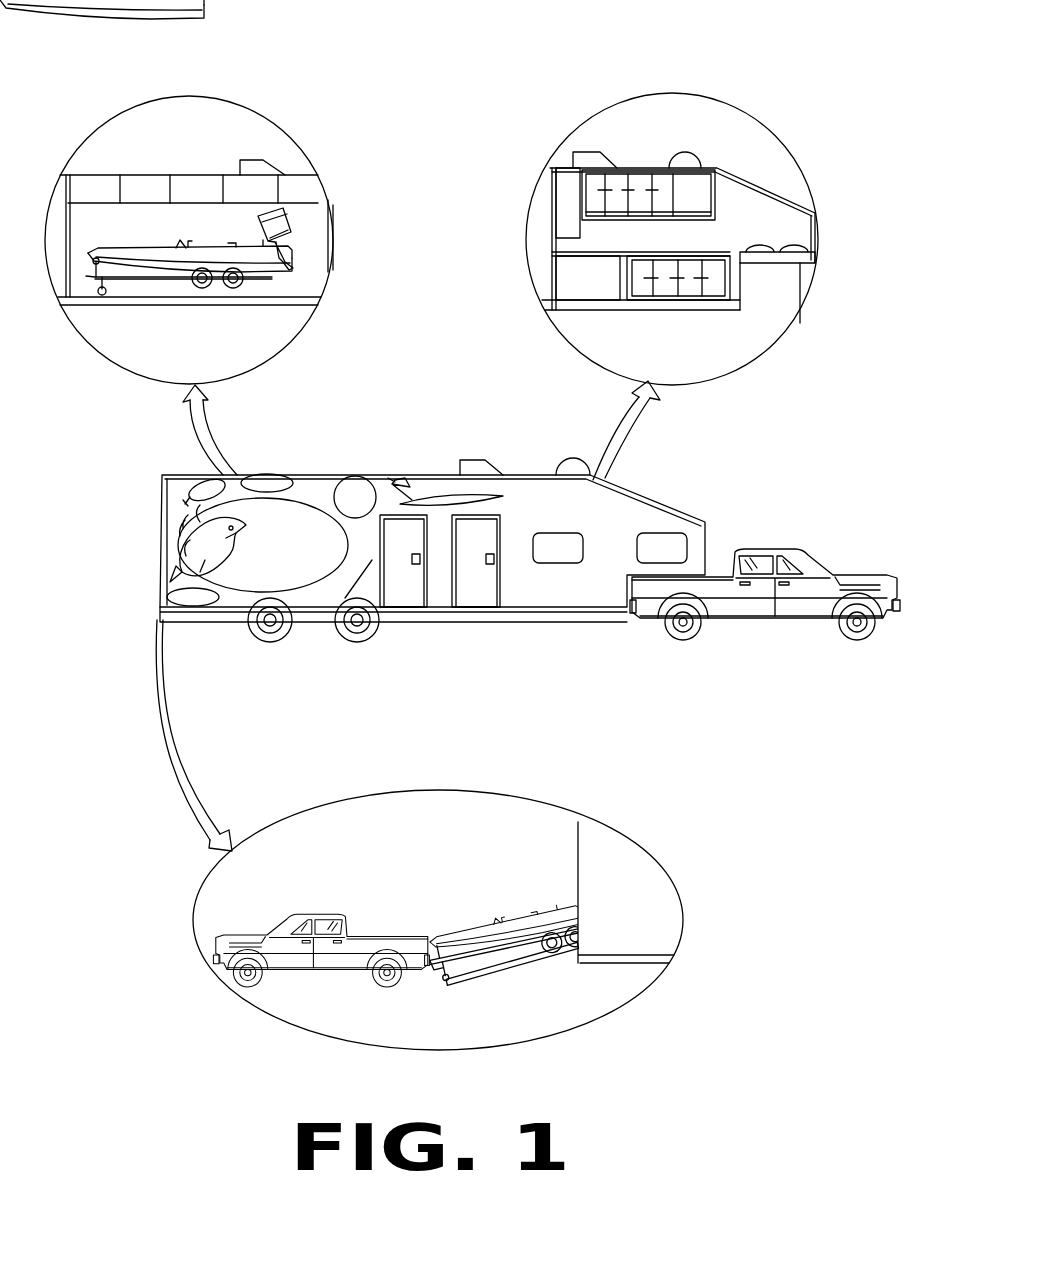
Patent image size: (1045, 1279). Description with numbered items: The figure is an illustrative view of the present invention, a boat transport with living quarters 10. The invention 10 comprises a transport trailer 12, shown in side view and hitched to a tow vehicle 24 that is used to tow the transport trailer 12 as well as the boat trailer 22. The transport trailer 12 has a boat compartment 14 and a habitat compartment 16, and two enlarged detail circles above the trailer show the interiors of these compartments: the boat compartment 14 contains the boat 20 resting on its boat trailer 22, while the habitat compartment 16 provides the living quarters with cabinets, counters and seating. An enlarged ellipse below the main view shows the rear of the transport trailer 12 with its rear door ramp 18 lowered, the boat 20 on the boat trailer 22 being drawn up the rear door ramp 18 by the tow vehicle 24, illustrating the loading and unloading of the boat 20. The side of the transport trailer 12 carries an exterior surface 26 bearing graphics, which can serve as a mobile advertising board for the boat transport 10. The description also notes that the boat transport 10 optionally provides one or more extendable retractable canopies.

The boat transport with living quarters 10 is at (708, 473).
The transport trailer 12 is at (422, 475).
The boat compartment 14 is at (340, 150).
The habitat compartment 16 is at (792, 139).
The rear door ramp 18 is at (481, 985).
The boat 20 is at (157, 245).
The boat trailer 22 is at (143, 280).
The tow vehicle 24 is at (757, 620).
The exterior surface 26 is at (288, 591).